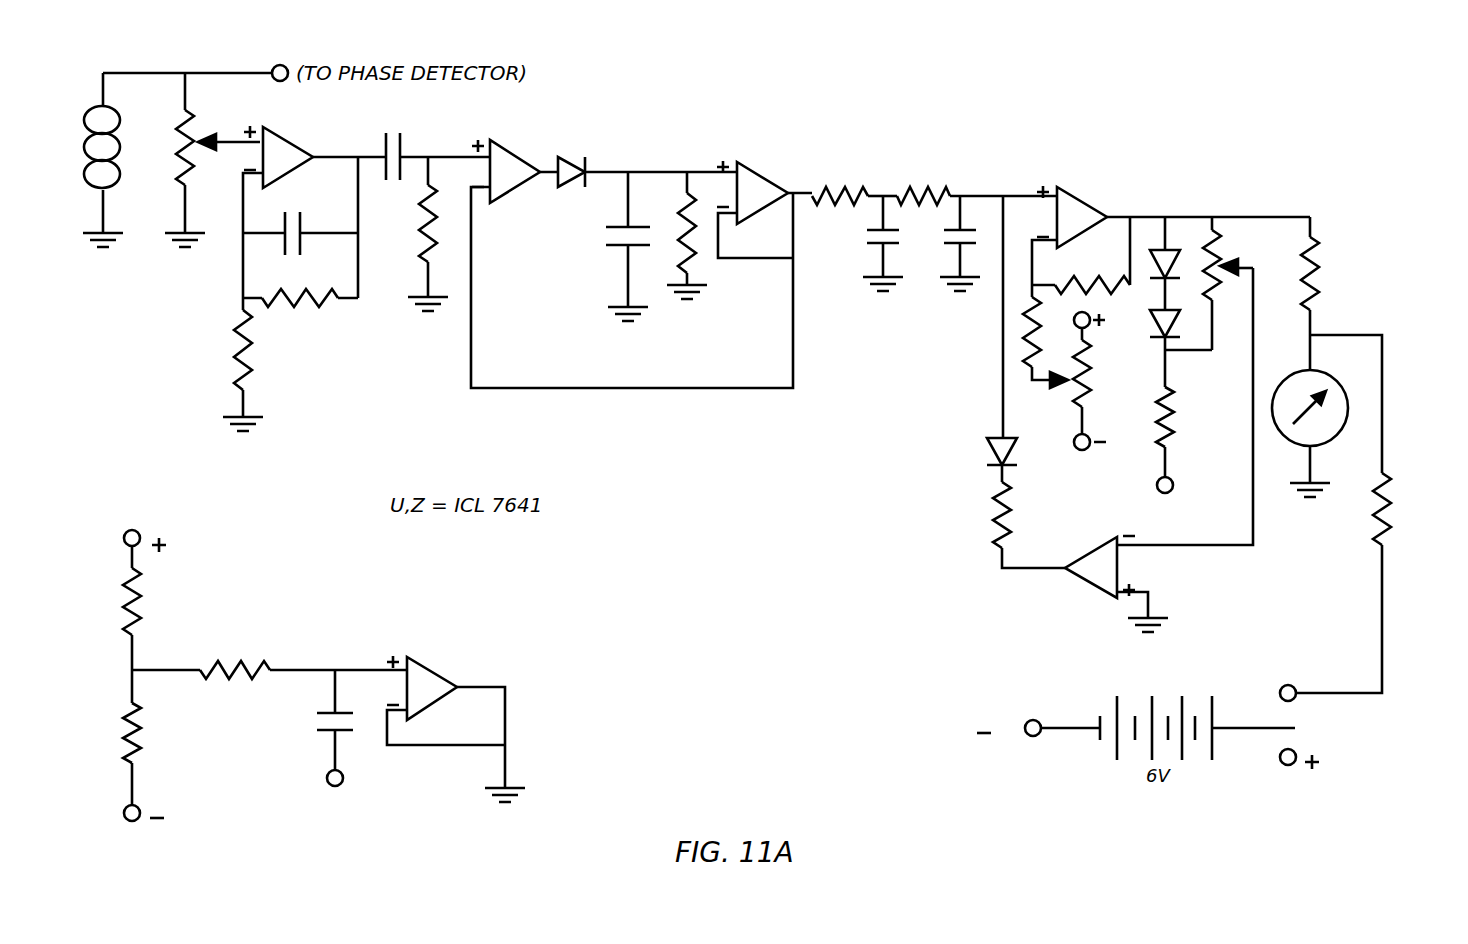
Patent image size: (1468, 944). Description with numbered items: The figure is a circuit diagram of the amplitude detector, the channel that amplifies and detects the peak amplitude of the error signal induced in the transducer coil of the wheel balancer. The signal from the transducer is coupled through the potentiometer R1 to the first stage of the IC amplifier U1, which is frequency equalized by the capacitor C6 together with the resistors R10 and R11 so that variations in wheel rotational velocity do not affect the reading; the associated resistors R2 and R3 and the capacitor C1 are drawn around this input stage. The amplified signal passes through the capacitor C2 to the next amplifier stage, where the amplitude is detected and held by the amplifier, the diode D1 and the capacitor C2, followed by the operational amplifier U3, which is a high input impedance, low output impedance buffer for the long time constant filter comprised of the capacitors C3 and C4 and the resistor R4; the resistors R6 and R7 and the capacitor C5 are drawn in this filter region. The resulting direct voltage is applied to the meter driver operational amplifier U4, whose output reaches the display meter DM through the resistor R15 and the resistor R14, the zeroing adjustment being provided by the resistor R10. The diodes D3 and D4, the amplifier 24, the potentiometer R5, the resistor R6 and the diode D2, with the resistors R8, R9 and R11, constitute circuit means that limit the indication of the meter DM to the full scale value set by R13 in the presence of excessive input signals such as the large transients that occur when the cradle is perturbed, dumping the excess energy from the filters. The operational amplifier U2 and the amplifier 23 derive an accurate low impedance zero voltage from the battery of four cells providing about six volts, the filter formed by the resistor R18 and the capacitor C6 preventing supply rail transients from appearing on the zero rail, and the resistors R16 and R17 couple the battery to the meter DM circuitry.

The potentiometer R1 is at (195, 160).
The resistor 1M R2 is at (300, 311).
The resistor 33K R3 is at (222, 364).
The resistor R4 is at (407, 234).
The potentiometer R5 is at (675, 235).
The resistor R6 is at (850, 195).
The resistor 330K R7 is at (975, 183).
The resistor 47K R8 is at (1081, 262).
The resistor 1M R9 is at (1045, 336).
The resistor R10 is at (1100, 381).
The resistor R11 is at (1029, 525).
The resistor R13 is at (1194, 381).
The resistor 10K R14 is at (1341, 345).
The resistor R15 is at (1357, 587).
The resistor R16 is at (155, 635).
The resistor 47K R17 is at (153, 762).
The resistor R18 is at (269, 669).
The capacitor .1 C1 is at (300, 230).
The capacitor C2 is at (421, 206).
The capacitor C3 is at (610, 246).
The capacitor C4 is at (878, 243).
The capacitor 1.5 C5 is at (968, 243).
The capacitor C6 is at (321, 728).
The diode D1 is at (647, 159).
The diode D2 is at (983, 460).
The diode D3 is at (1172, 263).
The diode D4 is at (1162, 348).
The IC amplifier U1 is at (314, 212).
The IC amplifier U2 is at (632, 264).
The operational amplifier ICL7641 U3 is at (764, 209).
The operational amplifier ICL7641 U4 is at (1171, 235).
The display meter DM is at (1337, 390).
The amplifier 23 is at (456, 729).
The amplifier 24 is at (1116, 584).